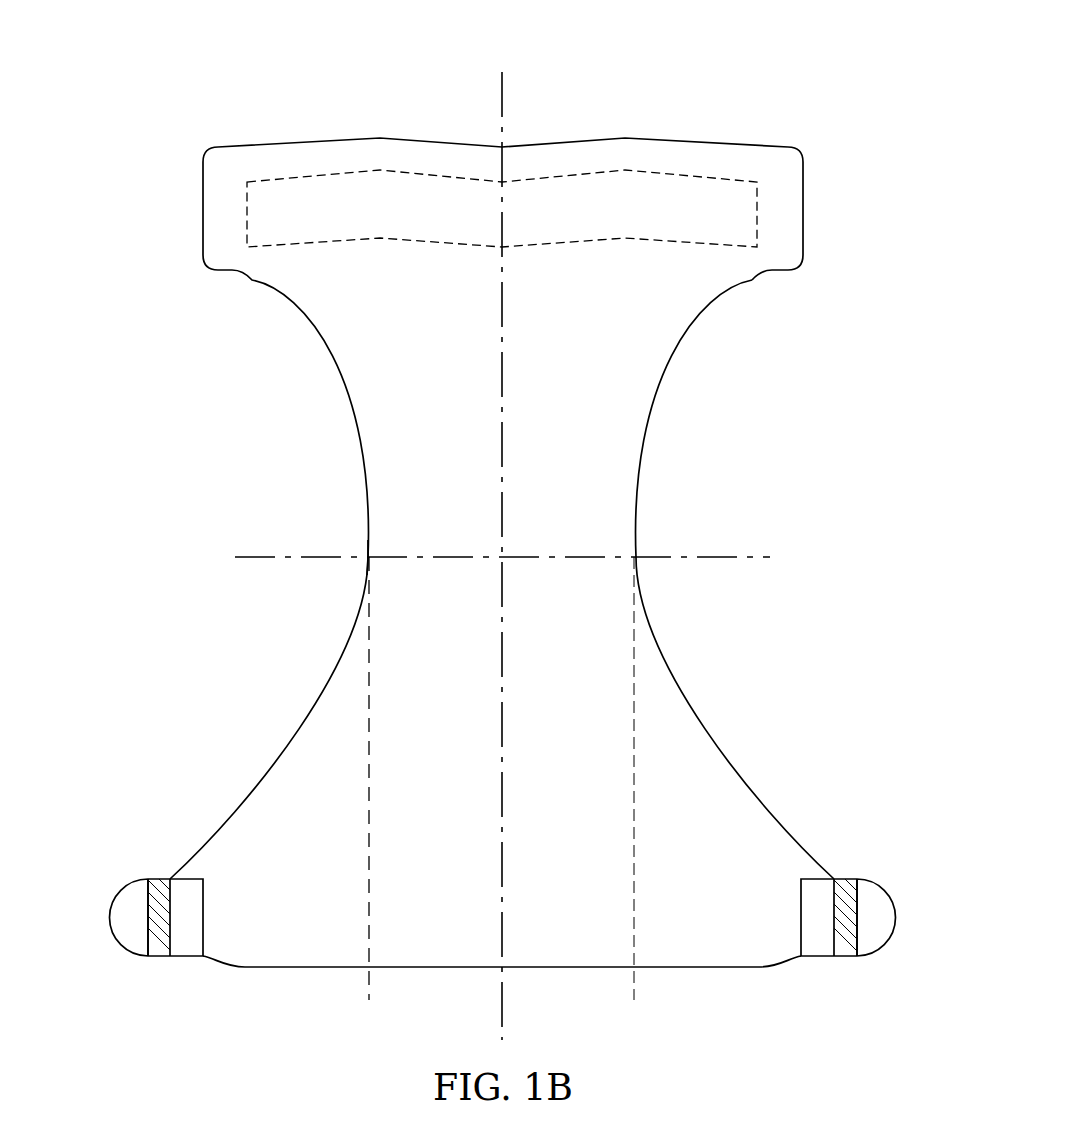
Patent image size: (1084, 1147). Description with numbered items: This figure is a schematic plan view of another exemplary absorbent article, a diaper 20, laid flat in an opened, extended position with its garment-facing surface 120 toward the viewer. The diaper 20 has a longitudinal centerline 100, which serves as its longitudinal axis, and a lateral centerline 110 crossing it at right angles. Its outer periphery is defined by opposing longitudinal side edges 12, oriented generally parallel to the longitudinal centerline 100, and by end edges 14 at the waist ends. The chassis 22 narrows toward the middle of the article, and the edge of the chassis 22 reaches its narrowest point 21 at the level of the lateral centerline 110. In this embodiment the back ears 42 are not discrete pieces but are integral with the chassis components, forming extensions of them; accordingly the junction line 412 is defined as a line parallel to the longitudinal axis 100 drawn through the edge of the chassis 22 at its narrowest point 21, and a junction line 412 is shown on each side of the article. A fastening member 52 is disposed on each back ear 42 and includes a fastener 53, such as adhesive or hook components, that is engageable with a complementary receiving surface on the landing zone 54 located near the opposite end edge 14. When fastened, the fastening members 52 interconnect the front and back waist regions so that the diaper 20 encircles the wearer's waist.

The diaper 20 is at (769, 80).
The end edge 14 is at (380, 138).
The landing zone 54 is at (623, 182).
The longitudinal side edge 12 is at (638, 513).
The chassis 22 is at (698, 717).
The narrowest point 21 is at (365, 554).
The lateral centerline 110 is at (330, 560).
The longitudinal centerline 100 is at (500, 738).
The garment-facing surface 120 is at (590, 417).
The junction line 412 is at (367, 890).
The fastening member 52 is at (110, 912).
The fastener 53 is at (158, 958).
The back ear 42 is at (246, 966).